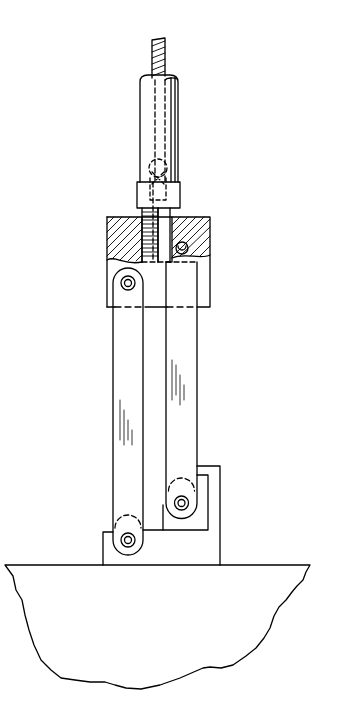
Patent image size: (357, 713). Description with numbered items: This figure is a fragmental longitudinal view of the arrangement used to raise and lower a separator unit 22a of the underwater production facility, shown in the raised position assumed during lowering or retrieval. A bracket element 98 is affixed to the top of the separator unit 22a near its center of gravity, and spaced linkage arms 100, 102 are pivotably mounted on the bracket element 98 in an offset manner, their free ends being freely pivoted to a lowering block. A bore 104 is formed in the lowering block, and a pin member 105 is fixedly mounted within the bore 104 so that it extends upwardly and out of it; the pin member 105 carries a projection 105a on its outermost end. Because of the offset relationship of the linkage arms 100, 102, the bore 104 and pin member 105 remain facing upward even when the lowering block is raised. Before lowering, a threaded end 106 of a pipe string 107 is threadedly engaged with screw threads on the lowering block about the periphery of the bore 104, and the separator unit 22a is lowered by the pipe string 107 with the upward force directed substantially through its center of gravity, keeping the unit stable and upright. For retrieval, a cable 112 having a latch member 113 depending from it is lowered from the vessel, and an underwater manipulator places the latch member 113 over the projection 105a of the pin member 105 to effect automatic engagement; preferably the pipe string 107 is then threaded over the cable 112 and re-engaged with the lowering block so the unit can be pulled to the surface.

The separator unit 22a is at (176, 628).
The bracket element 98 is at (210, 540).
The link 100 is at (190, 391).
The spaced linkage arm 102 is at (121, 490).
The bore 104 is at (137, 233).
The pin member 105 is at (180, 193).
The projection 105a is at (177, 165).
The threaded end 106 is at (142, 227).
The pipe string 107 is at (170, 108).
The cable 112 is at (152, 50).
The latch member 113 is at (146, 168).